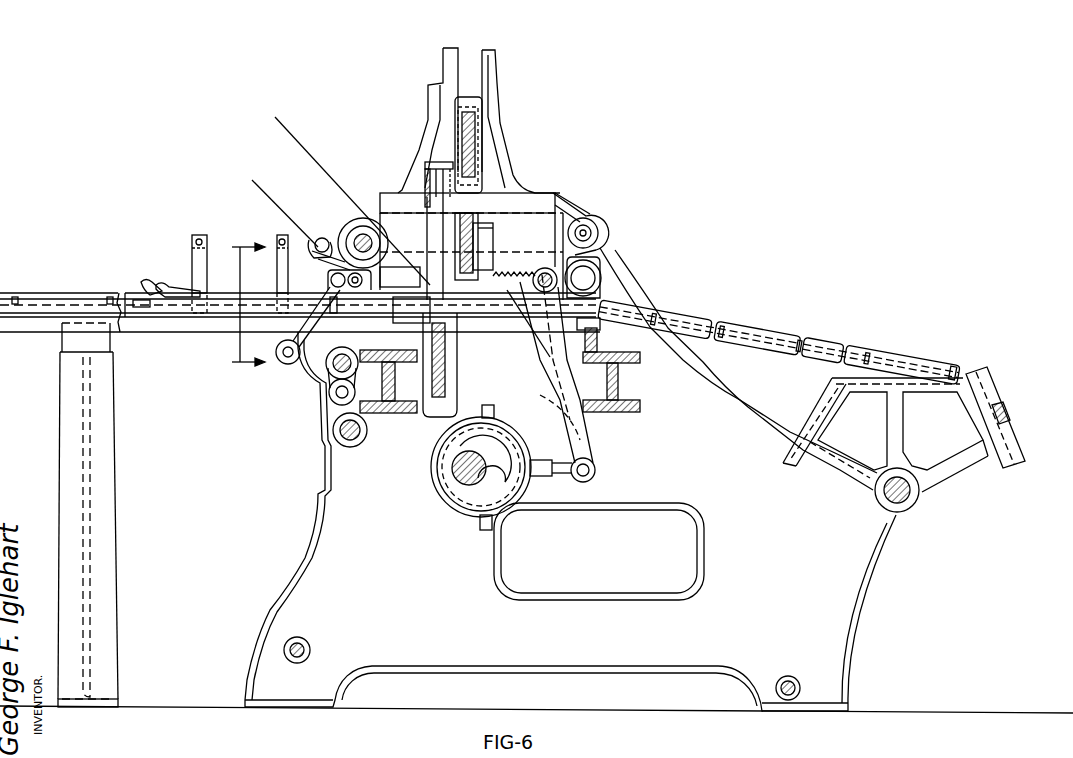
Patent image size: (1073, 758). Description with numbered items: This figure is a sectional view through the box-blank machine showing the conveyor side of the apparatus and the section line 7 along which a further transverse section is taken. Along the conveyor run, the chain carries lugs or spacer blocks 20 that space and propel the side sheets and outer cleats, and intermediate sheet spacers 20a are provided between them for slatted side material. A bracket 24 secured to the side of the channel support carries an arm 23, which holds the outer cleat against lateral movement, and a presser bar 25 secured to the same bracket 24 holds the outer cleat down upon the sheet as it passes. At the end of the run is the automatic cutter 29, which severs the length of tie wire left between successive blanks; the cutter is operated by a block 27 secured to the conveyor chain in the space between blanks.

The section line 7- 7 is at (248, 310).
The spacer blocks 20 is at (727, 320).
The intermediate sheet spacers 20a is at (802, 335).
The arm 23 is at (158, 285).
The bracket 24 is at (199, 234).
The presser bar 25 is at (145, 290).
The block 27 is at (1007, 412).
The automatic cutter 29 is at (592, 263).